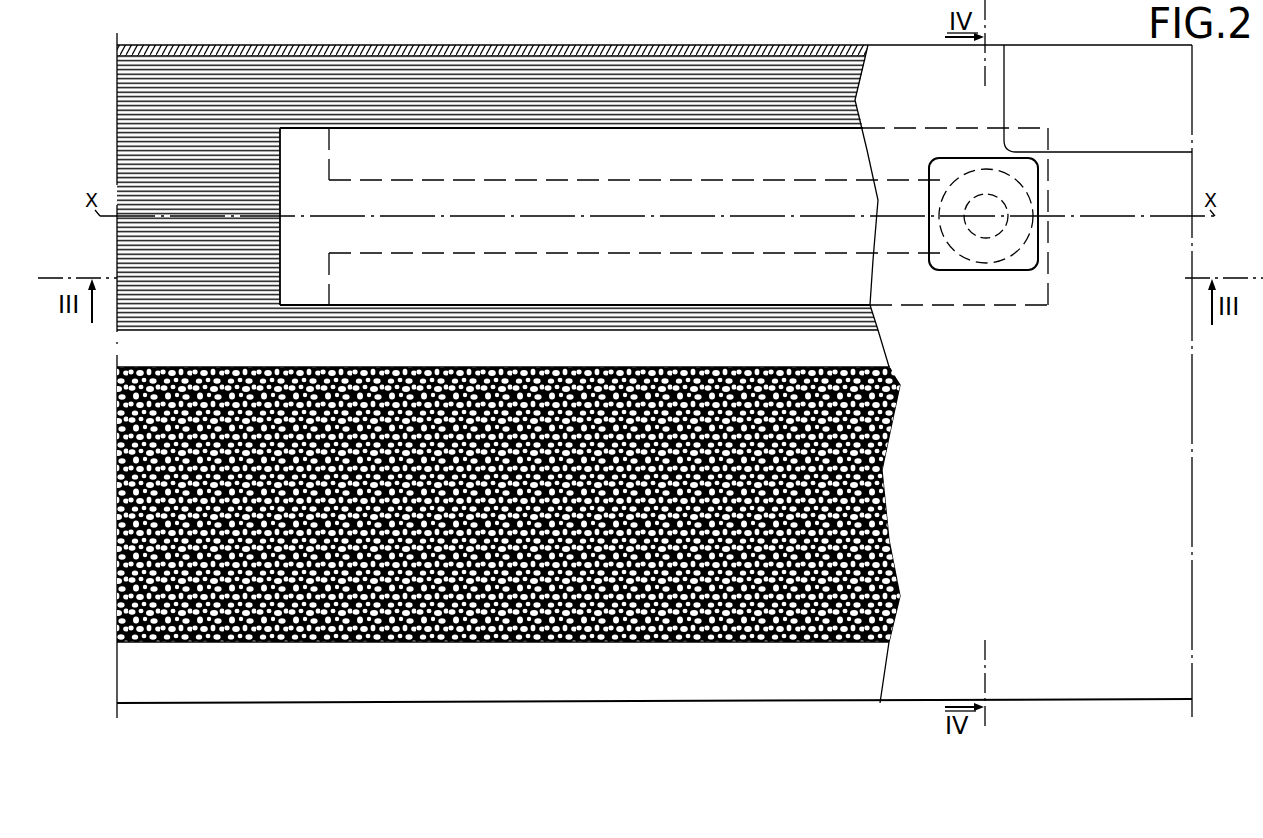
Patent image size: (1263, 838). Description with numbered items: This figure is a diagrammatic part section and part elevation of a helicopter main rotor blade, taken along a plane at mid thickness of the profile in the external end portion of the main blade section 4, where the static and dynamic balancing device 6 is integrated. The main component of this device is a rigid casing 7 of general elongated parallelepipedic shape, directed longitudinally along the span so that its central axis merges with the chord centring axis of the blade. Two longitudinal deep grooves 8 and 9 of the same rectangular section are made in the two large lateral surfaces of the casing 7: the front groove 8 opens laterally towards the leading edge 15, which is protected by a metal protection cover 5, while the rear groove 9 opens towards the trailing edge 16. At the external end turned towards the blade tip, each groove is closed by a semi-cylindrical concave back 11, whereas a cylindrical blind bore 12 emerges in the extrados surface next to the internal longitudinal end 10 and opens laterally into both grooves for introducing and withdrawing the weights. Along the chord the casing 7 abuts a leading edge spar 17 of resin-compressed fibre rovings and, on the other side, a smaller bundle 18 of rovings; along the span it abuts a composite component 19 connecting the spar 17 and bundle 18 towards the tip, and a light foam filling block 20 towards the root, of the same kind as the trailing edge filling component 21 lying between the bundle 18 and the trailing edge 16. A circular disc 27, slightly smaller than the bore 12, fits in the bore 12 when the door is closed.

The main blade section 4 is at (812, 43).
The metal protection cover 5 is at (218, 52).
The static and dynamic balancing device 6 is at (658, 118).
The casing 7 is at (298, 158).
The front groove 8 is at (548, 150).
The rear groove 9 is at (845, 273).
The internal longitudinal end 10 is at (1050, 190).
The concave back 11 is at (332, 150).
The cylindrical blind bore 12 is at (968, 178).
The leading edge 15 is at (150, 52).
The trailing edge 16 is at (172, 703).
The leading edge spar 17 is at (452, 70).
The bundle of reinforcement fibre rovings 18 is at (865, 318).
The composite component 19 is at (172, 118).
The filling block 20 is at (1063, 275).
The trailing edge filling component 21 is at (835, 487).
The circular disc 27 is at (1032, 172).